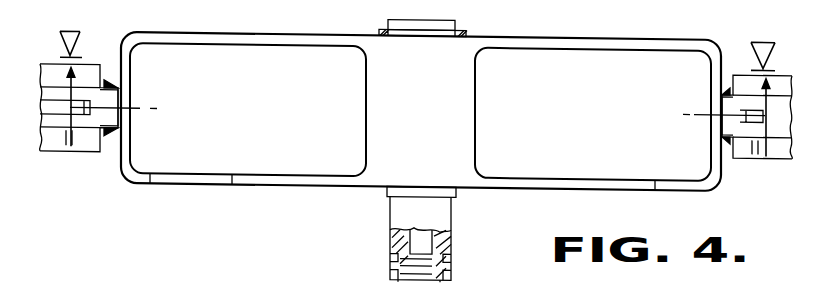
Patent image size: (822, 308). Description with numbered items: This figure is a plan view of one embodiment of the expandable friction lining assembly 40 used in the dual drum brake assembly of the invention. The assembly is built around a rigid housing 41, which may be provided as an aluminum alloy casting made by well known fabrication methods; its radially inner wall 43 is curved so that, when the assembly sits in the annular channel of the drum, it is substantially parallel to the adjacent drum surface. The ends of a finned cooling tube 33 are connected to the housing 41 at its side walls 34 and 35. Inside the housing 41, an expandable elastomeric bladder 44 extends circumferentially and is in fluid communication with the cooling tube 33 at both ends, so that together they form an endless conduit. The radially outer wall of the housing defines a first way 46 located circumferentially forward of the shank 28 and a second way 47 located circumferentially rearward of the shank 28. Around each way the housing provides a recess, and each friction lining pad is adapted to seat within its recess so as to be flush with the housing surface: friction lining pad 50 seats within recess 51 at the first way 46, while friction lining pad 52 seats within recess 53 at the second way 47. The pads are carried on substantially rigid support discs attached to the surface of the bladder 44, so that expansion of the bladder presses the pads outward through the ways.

The shank 28 is at (397, 211).
The finned cooling tube 33 is at (52, 150).
The side wall 34 is at (118, 152).
The side wall 35 is at (740, 158).
The friction lining assembly 40 is at (733, 50).
The rigid housing 41 is at (456, 63).
The radially inner wall 43 is at (398, 281).
The expandable elastomeric bladder 44 is at (440, 281).
The first way 46 is at (150, 174).
The second way 47 is at (725, 172).
The friction lining pad 50 is at (254, 98).
The recess 51 is at (232, 174).
The friction lining pad 52 is at (624, 120).
The recess 53 is at (656, 178).